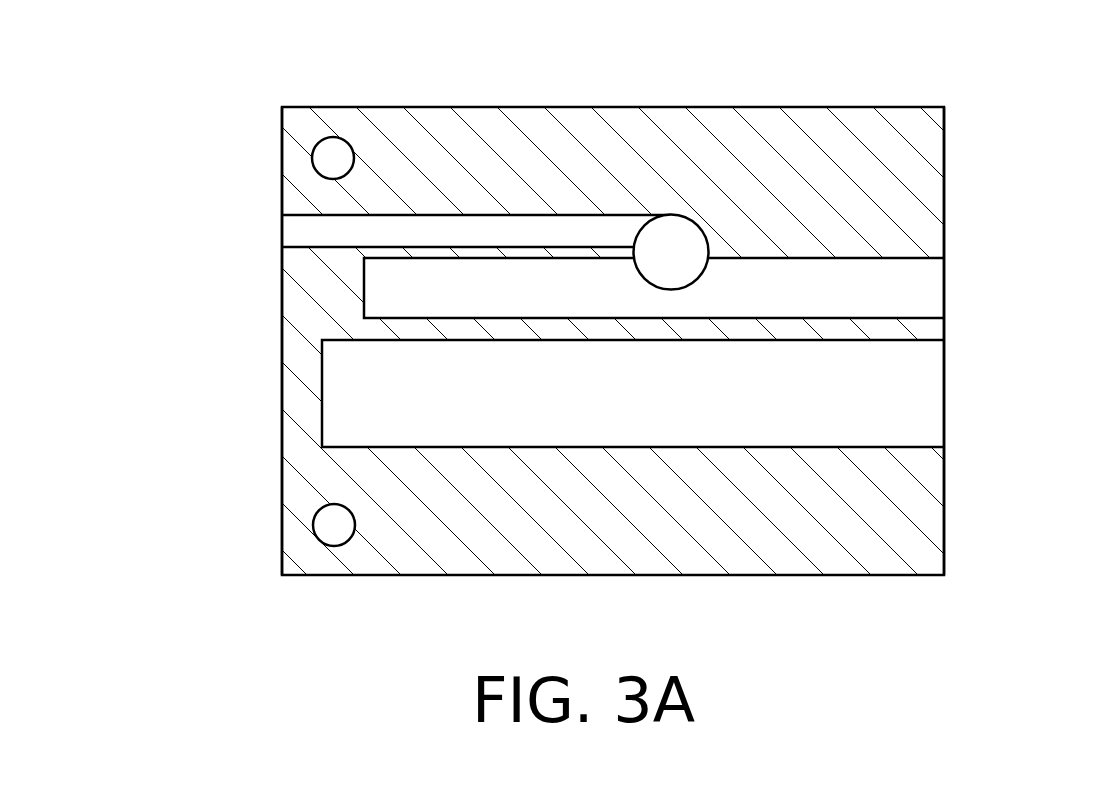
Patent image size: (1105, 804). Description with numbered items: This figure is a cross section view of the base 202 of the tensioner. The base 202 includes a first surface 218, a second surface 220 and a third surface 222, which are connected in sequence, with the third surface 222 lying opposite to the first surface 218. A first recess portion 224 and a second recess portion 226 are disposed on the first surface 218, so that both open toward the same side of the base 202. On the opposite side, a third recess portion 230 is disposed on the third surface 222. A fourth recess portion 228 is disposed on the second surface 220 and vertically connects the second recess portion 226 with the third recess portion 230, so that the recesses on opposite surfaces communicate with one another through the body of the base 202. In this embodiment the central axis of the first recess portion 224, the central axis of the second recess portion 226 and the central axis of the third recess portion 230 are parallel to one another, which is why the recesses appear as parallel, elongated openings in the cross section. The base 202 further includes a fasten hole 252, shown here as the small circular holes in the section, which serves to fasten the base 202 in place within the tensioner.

The base 202 is at (303, 107).
The first surface 218 is at (944, 158).
The second surface 220 is at (597, 172).
The third surface 222 is at (282, 158).
The first recess portion 224 is at (897, 340).
The second recess portion 226 is at (897, 258).
The fourth recess portion 228 is at (708, 240).
The third recess portion 230 is at (296, 216).
The fasten hole 252 is at (334, 159).